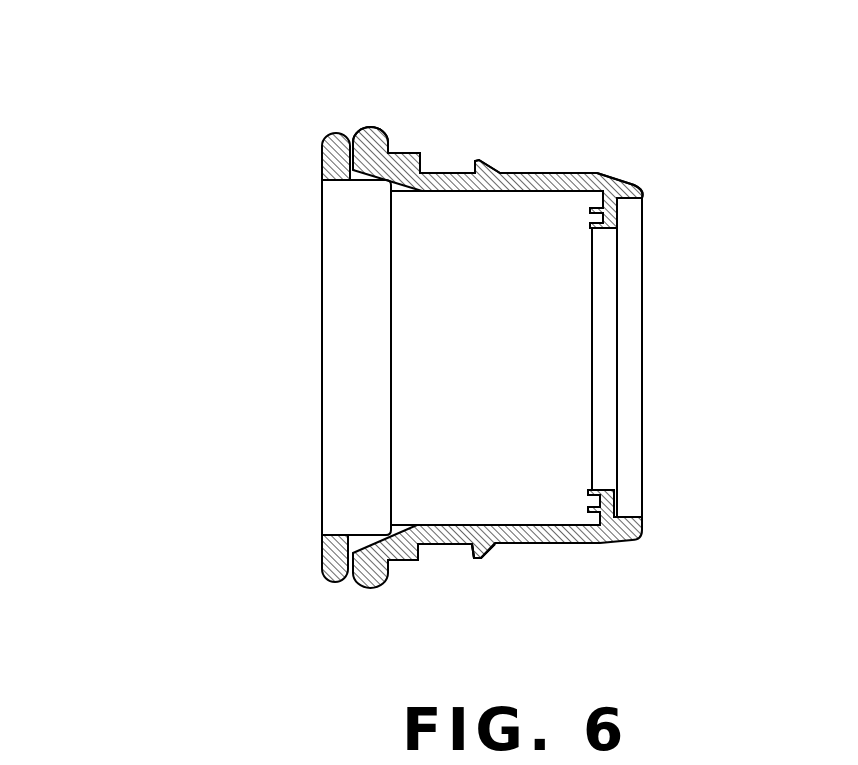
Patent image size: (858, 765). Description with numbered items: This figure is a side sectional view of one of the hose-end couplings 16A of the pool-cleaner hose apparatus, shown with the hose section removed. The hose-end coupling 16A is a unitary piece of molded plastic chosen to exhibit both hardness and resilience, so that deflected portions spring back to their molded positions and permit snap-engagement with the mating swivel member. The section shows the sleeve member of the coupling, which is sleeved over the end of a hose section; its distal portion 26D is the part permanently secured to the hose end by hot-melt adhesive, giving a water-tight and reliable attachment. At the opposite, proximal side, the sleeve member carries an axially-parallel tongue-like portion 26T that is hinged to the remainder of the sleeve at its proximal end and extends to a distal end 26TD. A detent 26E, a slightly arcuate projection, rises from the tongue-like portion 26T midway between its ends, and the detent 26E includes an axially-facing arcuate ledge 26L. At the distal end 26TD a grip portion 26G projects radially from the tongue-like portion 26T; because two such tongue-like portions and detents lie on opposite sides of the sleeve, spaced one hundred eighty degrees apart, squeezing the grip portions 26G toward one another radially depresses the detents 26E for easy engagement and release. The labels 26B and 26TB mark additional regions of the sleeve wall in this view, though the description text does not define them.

The hose-end coupling 16A is at (745, 85).
The bore 26B is at (437, 397).
The distal portion 26D is at (638, 185).
The detent 26E is at (487, 165).
The grip portion 26G is at (366, 130).
The axially-facing arcuate ledge 26L is at (474, 557).
The tongue-like portion 26T is at (447, 175).
The top wall band 26TB is at (549, 175).
The distal end 26TD is at (399, 152).